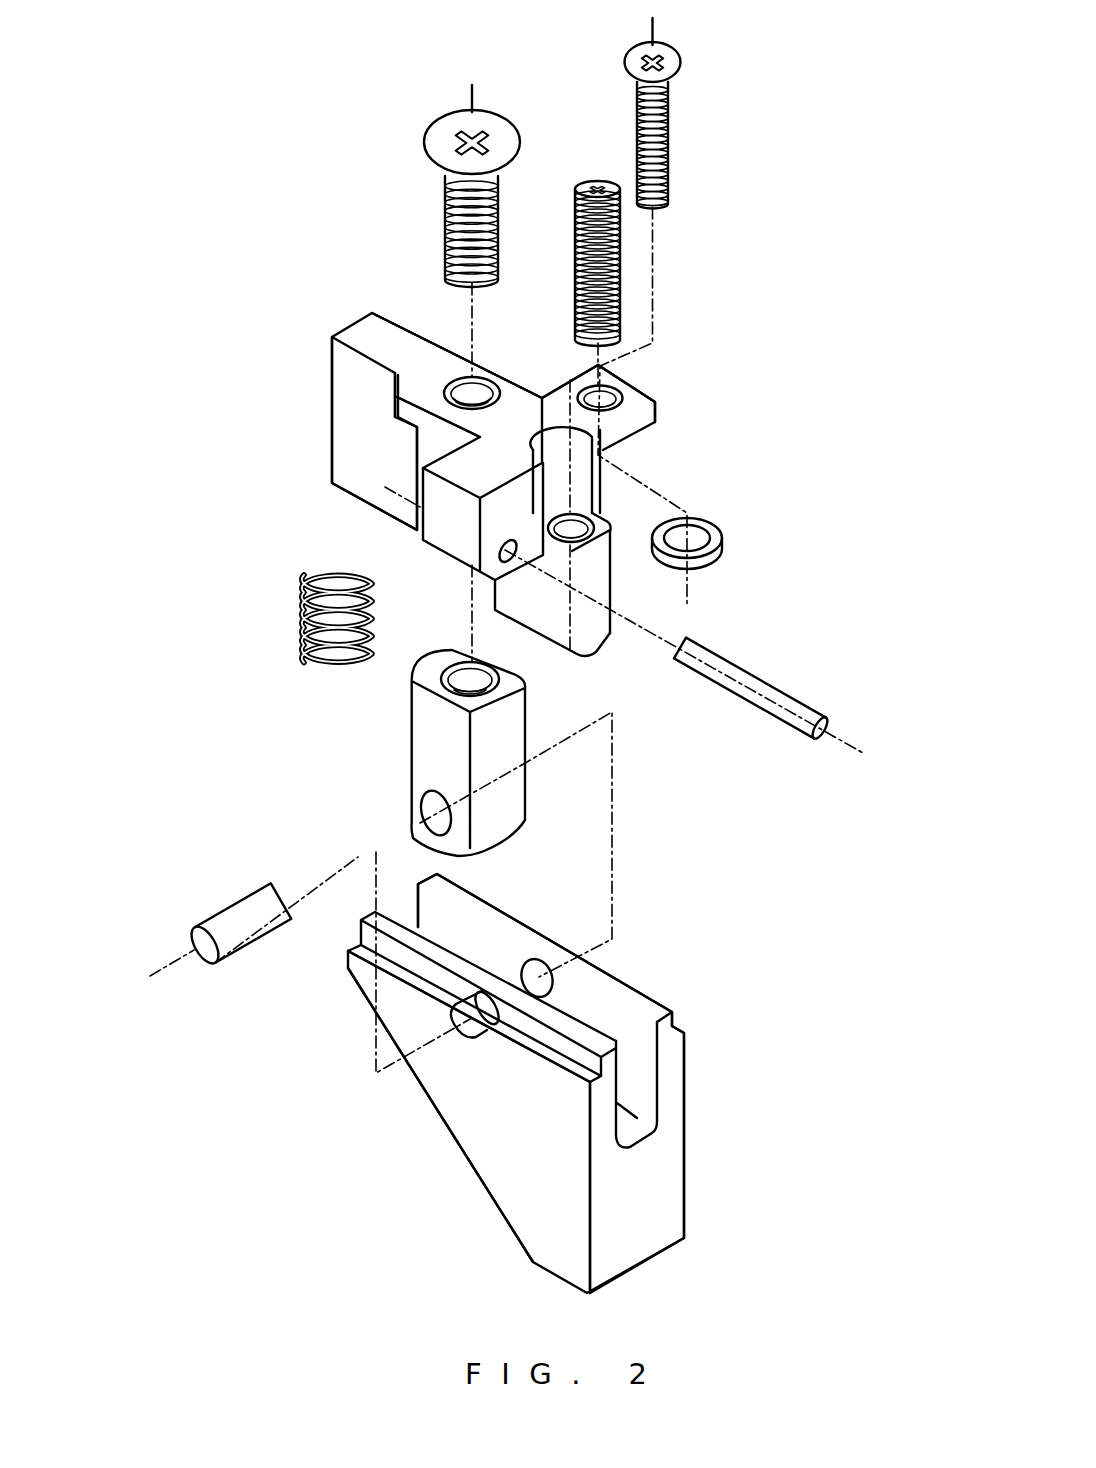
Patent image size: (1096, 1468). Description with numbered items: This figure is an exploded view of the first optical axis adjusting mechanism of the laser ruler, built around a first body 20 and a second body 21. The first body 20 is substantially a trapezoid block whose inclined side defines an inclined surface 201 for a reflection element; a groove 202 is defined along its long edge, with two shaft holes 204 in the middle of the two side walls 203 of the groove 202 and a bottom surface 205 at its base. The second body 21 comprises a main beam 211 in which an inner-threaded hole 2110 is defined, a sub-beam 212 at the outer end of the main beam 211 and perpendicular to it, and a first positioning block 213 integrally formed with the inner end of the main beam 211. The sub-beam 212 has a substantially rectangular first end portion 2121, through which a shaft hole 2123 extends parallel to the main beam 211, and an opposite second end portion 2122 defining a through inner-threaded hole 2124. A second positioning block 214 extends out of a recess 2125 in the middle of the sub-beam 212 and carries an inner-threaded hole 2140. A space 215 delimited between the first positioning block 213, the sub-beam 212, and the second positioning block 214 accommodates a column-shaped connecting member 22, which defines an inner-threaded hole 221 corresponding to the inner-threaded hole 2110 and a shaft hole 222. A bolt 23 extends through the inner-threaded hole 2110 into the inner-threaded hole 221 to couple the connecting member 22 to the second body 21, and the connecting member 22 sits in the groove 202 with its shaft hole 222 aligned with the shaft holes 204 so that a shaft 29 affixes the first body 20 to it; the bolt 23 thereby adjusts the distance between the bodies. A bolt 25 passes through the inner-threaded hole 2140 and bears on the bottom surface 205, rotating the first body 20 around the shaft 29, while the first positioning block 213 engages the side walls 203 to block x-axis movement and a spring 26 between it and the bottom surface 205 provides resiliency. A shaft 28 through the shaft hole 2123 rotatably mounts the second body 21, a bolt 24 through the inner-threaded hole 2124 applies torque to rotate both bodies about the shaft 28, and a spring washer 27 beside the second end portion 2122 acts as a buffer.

The first body 20 is at (642, 1200).
The inclined surface 201 is at (444, 1127).
The groove 202 is at (636, 1070).
The side walls 203 is at (600, 978).
The shaft holes 204 is at (472, 1030).
The bottom surface 205 is at (630, 1128).
The second body 21 is at (365, 332).
The main beam 211 is at (445, 365).
The inner-threaded hole 2110 is at (463, 392).
The sub-beam 212 is at (520, 418).
The first end portion 2121 is at (448, 520).
The second end portion 2122 is at (642, 415).
The shaft hole 2123 is at (516, 556).
The inner-threaded hole 2124 is at (607, 392).
The recess 2125 is at (582, 455).
The first positioning block 213 is at (358, 445).
The second positioning block 214 is at (594, 567).
The inner-threaded hole 2140 is at (600, 508).
The space 215 is at (430, 447).
The connecting member 22 is at (500, 755).
The inner-threaded hole 221 is at (476, 678).
The shaft hole 222 is at (436, 806).
The bolt 23 is at (466, 126).
The bolt 24 is at (670, 62).
The bolt 25 is at (597, 186).
The spring 26 is at (305, 626).
The spring washer 27 is at (716, 531).
The shaft 28 is at (767, 698).
The shaft 29 is at (240, 915).